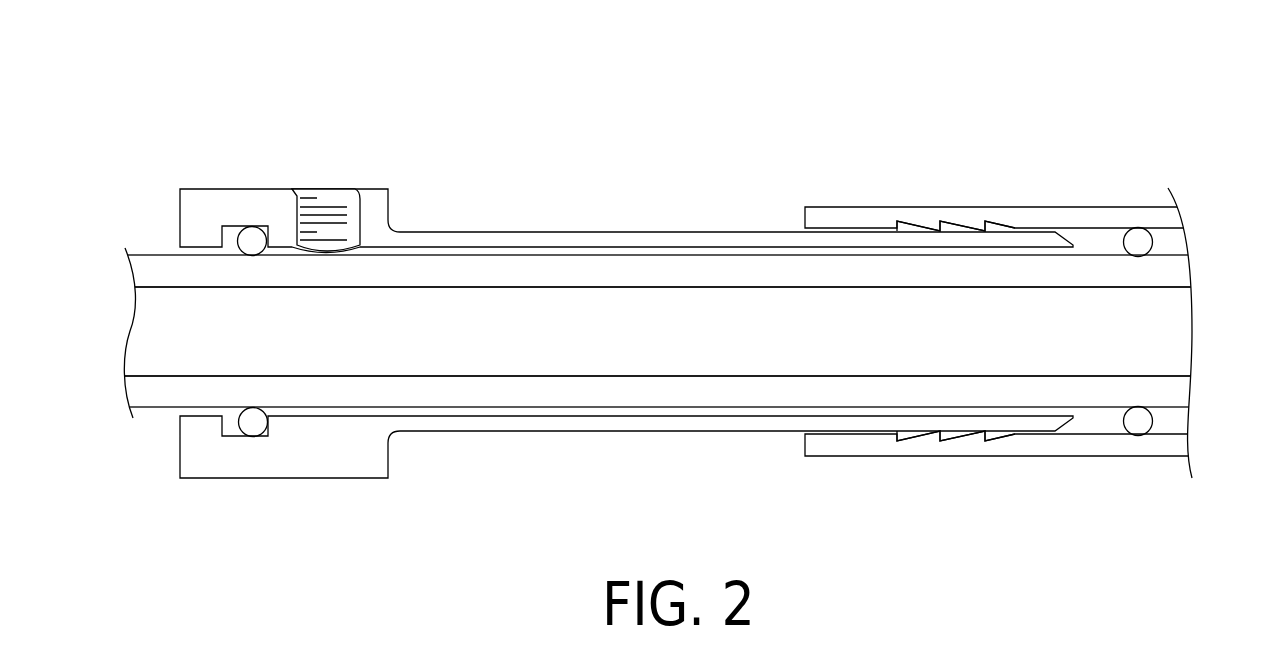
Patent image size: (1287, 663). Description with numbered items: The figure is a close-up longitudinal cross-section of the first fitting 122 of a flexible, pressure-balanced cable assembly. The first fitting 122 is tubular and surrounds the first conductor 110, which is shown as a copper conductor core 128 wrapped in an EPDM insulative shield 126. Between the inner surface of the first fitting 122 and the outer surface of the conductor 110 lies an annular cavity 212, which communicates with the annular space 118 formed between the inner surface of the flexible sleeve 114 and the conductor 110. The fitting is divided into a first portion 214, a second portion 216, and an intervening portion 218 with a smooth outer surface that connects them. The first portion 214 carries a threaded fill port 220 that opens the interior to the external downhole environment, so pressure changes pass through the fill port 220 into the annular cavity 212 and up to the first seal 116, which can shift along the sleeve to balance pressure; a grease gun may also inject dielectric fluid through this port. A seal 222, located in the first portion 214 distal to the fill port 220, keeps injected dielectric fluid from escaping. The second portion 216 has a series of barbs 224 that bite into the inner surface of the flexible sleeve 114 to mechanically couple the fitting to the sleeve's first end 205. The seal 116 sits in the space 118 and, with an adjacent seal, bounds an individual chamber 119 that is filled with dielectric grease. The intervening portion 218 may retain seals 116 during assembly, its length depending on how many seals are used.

The first fitting 122 is at (80, 105).
The first conductor 110 is at (653, 332).
The insulative shield 126 is at (1175, 272).
The copper conductor core 128 is at (1172, 328).
The annular cavity 212 is at (535, 250).
The first portion 214 is at (388, 507).
The second portion 216 is at (1028, 507).
The intervening portion 218 is at (890, 507).
The threaded fill port 220 is at (328, 187).
The seal 222 is at (254, 240).
The barbs 224 is at (997, 441).
The first end 205 is at (792, 221).
The flexible sleeve 114 is at (993, 207).
The seal 116 is at (1145, 242).
The annular space 118 is at (1097, 240).
The individual chamber 119 is at (1175, 243).